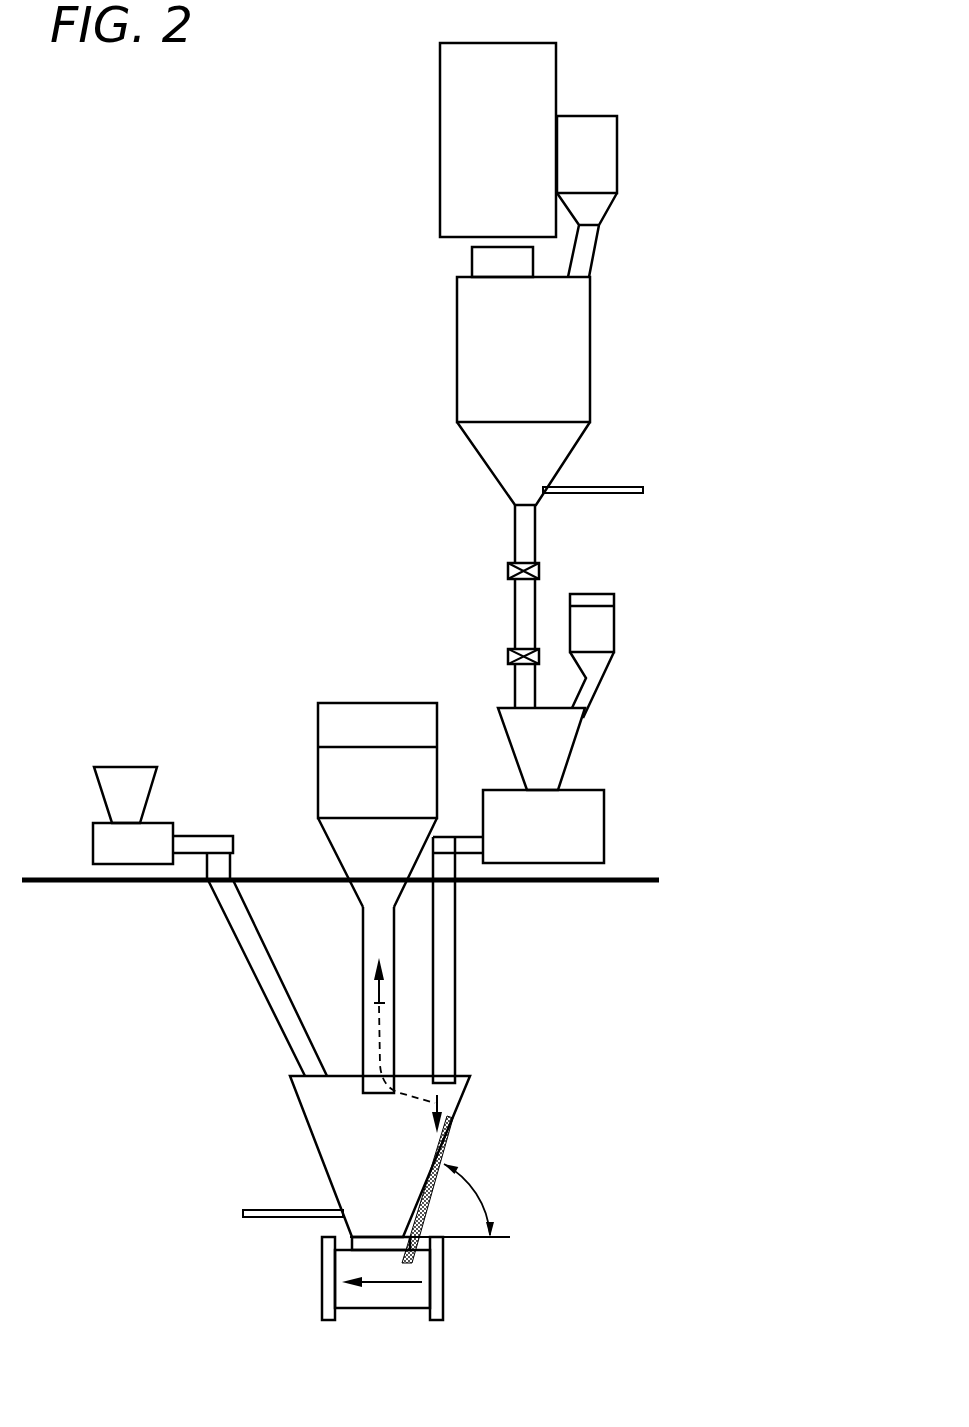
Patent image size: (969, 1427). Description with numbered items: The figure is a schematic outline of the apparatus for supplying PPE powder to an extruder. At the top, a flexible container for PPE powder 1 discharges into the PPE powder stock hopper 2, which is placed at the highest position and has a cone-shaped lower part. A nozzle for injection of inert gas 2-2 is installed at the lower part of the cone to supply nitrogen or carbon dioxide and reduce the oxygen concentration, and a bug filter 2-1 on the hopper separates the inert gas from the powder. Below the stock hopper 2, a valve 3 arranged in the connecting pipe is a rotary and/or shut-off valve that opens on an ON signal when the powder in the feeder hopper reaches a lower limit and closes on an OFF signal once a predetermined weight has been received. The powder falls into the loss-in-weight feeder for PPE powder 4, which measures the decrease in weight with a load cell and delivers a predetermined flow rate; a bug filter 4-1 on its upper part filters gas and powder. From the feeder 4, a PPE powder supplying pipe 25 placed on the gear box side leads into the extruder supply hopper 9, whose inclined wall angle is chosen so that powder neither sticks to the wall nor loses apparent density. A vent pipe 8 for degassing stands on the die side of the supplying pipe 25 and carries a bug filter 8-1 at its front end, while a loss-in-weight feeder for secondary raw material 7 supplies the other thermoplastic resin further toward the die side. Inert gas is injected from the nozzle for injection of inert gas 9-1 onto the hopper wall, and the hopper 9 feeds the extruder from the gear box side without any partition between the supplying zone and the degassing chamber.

The flexible container for PPE powder 1 is at (453, 139).
The bug filter 2-1 is at (602, 155).
The PPE powder stock hopper 2 is at (578, 348).
The nozzle for injection of inert gas 2-2 is at (643, 493).
The valve 3 is at (508, 571).
The bug filter 4-1 is at (605, 625).
The loss-in-weight feeder for PPE powder 4 is at (592, 825).
The loss-in-weight feeder for secondary raw material 7 is at (110, 783).
The bug filter 8-1 is at (325, 777).
The PPE powder supplying pipe 25 is at (445, 936).
The vent pipe 8 is at (389, 1026).
The extruder supply hopper 9 is at (326, 1114).
The nozzle for injection of inert gas 9-1 is at (268, 1210).